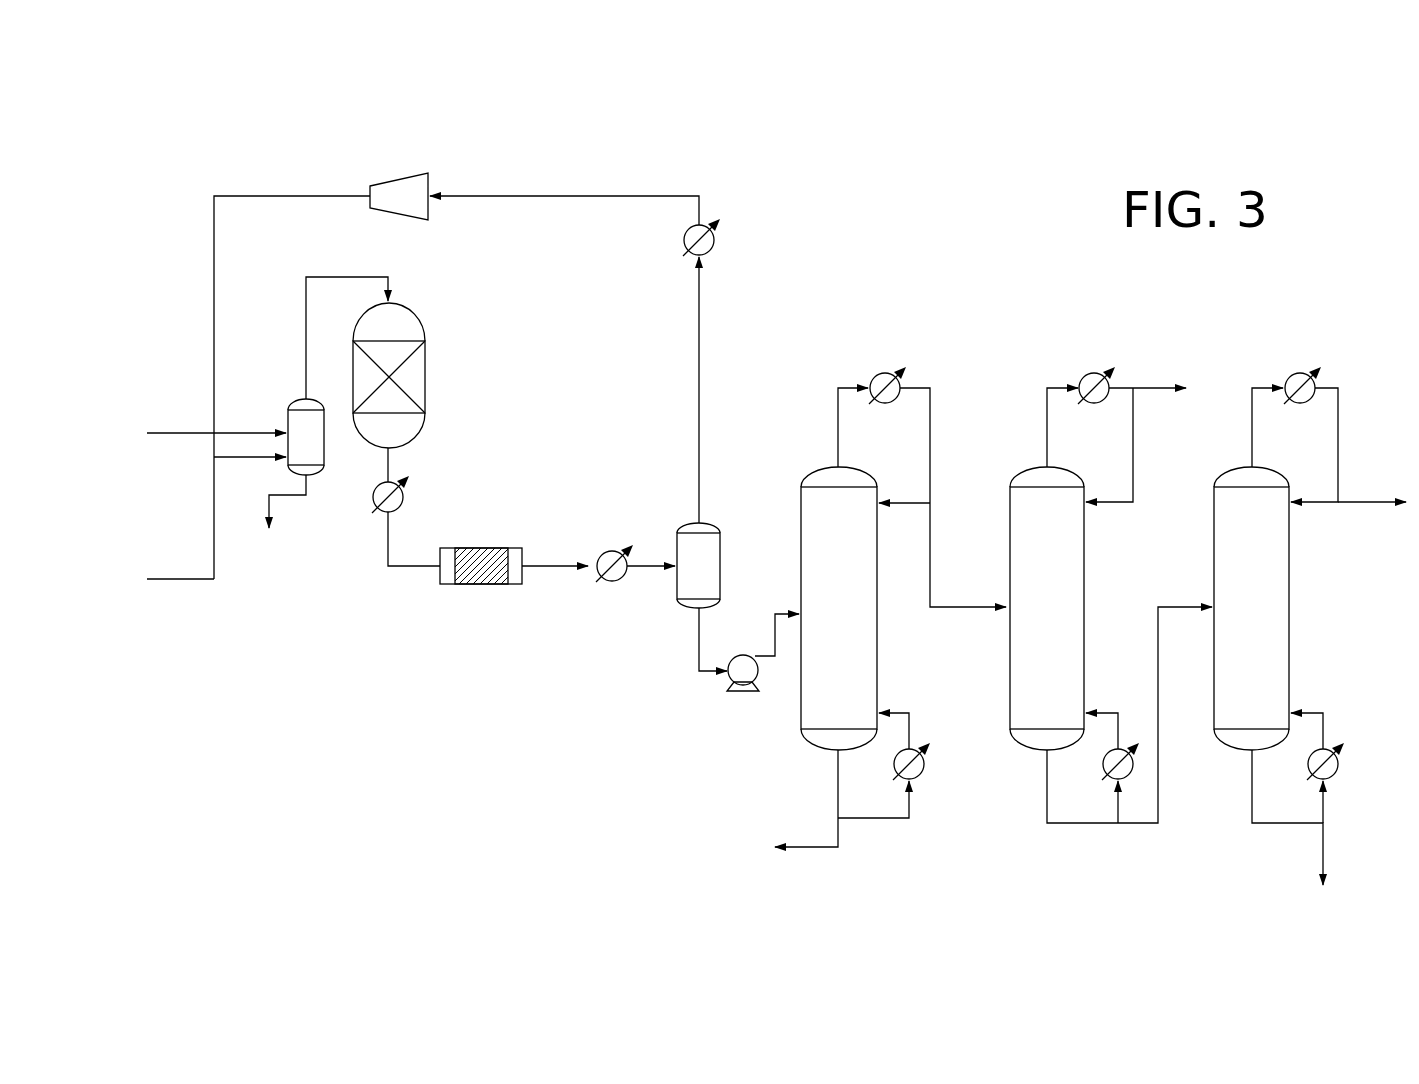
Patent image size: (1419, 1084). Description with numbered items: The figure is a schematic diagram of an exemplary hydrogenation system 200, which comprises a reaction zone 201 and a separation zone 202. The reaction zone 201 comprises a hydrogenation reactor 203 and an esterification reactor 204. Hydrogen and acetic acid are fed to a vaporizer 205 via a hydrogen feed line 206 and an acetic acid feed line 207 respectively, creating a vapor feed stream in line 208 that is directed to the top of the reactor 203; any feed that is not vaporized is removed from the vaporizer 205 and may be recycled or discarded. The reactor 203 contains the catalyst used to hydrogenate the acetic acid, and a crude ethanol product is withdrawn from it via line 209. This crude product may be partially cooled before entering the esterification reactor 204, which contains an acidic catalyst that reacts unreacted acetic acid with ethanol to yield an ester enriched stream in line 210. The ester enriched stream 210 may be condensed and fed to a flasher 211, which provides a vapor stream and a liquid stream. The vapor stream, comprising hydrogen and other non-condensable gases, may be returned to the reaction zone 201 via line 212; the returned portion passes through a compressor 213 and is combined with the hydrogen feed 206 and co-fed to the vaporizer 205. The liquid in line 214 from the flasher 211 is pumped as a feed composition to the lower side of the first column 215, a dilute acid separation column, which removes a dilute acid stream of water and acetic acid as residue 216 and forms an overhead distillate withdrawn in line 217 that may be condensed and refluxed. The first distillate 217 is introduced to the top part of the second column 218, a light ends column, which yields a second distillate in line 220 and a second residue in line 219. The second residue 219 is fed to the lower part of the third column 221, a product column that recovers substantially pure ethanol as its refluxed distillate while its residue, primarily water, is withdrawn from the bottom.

The hydrogenation system 200 is at (921, 211).
The reaction zone 201 is at (394, 757).
The separation zone 202 is at (1033, 850).
The hydrogenation reactor 203 is at (430, 357).
The esterification reactor 204 is at (475, 587).
The vaporizer 205 is at (298, 408).
The hydrogen feed line 206 is at (177, 435).
The acetic acid feed line 207 is at (181, 583).
The vapor feed stream line 208 is at (327, 277).
The crude ethanol product line 209 is at (395, 463).
The ester enriched stream line 210 is at (548, 568).
The flasher 211 is at (682, 525).
The vapor return line 212 is at (699, 376).
The compressor 213 is at (393, 188).
The liquid line 214 is at (708, 673).
The first column 215 is at (862, 650).
The residue 216 is at (840, 835).
The first distillate line 217 is at (930, 430).
The second column 218 is at (1068, 572).
The second residue line 219 is at (1090, 825).
The second distillate line 220 is at (1145, 388).
The third column 221 is at (1272, 626).